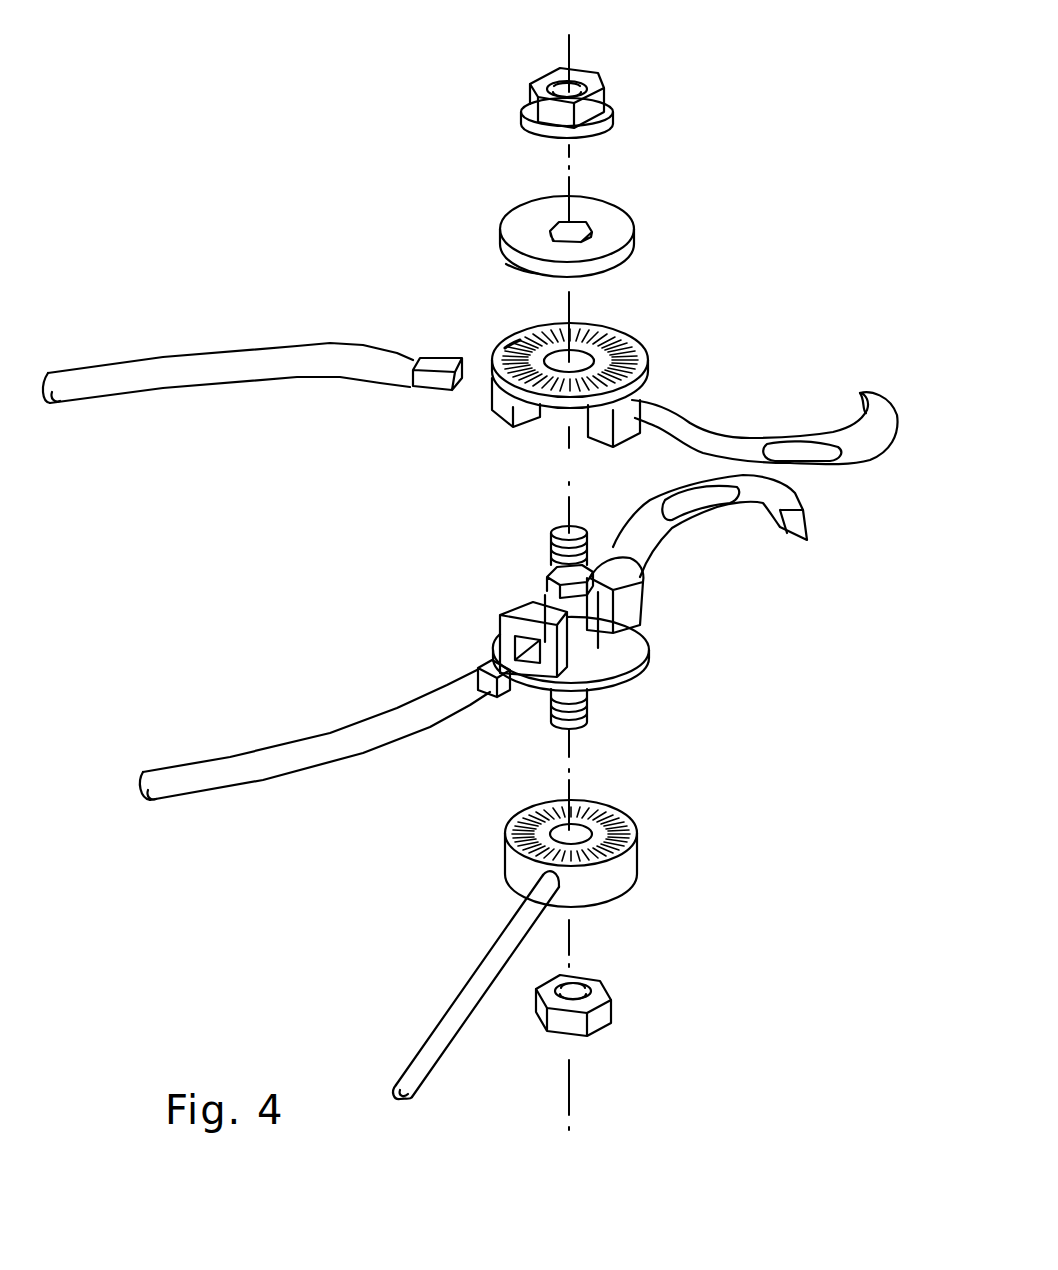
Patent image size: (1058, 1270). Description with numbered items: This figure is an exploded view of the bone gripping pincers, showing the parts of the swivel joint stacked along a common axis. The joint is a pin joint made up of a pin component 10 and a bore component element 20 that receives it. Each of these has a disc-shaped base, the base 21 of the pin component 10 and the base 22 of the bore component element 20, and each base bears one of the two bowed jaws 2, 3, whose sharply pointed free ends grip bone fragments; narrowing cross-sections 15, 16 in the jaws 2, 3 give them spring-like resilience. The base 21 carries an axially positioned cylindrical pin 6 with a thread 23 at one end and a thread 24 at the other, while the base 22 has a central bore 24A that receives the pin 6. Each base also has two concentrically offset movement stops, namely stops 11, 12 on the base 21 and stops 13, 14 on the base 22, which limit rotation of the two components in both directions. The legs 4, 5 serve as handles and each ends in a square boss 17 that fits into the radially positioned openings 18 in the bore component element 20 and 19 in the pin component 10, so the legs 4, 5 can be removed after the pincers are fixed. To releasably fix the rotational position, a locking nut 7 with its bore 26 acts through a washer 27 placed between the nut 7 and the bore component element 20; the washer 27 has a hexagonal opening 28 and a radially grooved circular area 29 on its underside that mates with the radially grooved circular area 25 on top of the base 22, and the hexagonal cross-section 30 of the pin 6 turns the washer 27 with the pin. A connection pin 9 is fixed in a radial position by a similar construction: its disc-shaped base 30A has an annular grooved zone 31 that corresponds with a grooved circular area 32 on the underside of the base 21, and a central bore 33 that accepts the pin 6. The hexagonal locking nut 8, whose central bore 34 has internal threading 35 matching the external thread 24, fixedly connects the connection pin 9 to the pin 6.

The jaw 2 is at (754, 527).
The jaw 3 is at (766, 442).
The leg 4 is at (318, 745).
The leg 5 is at (247, 366).
The cylindrical pin 6 is at (557, 705).
The locking nut 7 is at (572, 103).
The locking nut 8 is at (621, 976).
The connection pin 9 is at (485, 948).
The pin component 10 is at (589, 624).
The movement stop 11 is at (645, 577).
The movement stop 12 is at (489, 629).
The movement stop 13 is at (612, 430).
The movement stop 14 is at (505, 417).
The narrowing cross-section 15 is at (700, 500).
The narrowing cross-section 16 is at (800, 452).
The square boss 17 is at (432, 360).
The opening 18 is at (494, 415).
The opening 19 is at (527, 648).
The bore component element 20 is at (568, 389).
The disc-shaped base 21 is at (637, 668).
The disc-shaped base 22 is at (640, 375).
The thread 23 is at (560, 553).
The thread 24 is at (590, 718).
The central bore 24A is at (592, 365).
The radially grooved circular area 25 is at (520, 355).
The bore 26 is at (548, 91).
The washer 27 is at (586, 231).
The hexagonal opening 28 is at (553, 233).
The radially grooved circular area 29 is at (510, 268).
The hexagonal cross-section 30 is at (562, 583).
The disc-shaped base 30A is at (593, 846).
The annular grooved zone 31 is at (640, 823).
The grooved circular area 32 is at (615, 680).
The bore 33 is at (560, 835).
The central bore 34 is at (590, 990).
The internal threading 35 is at (577, 983).